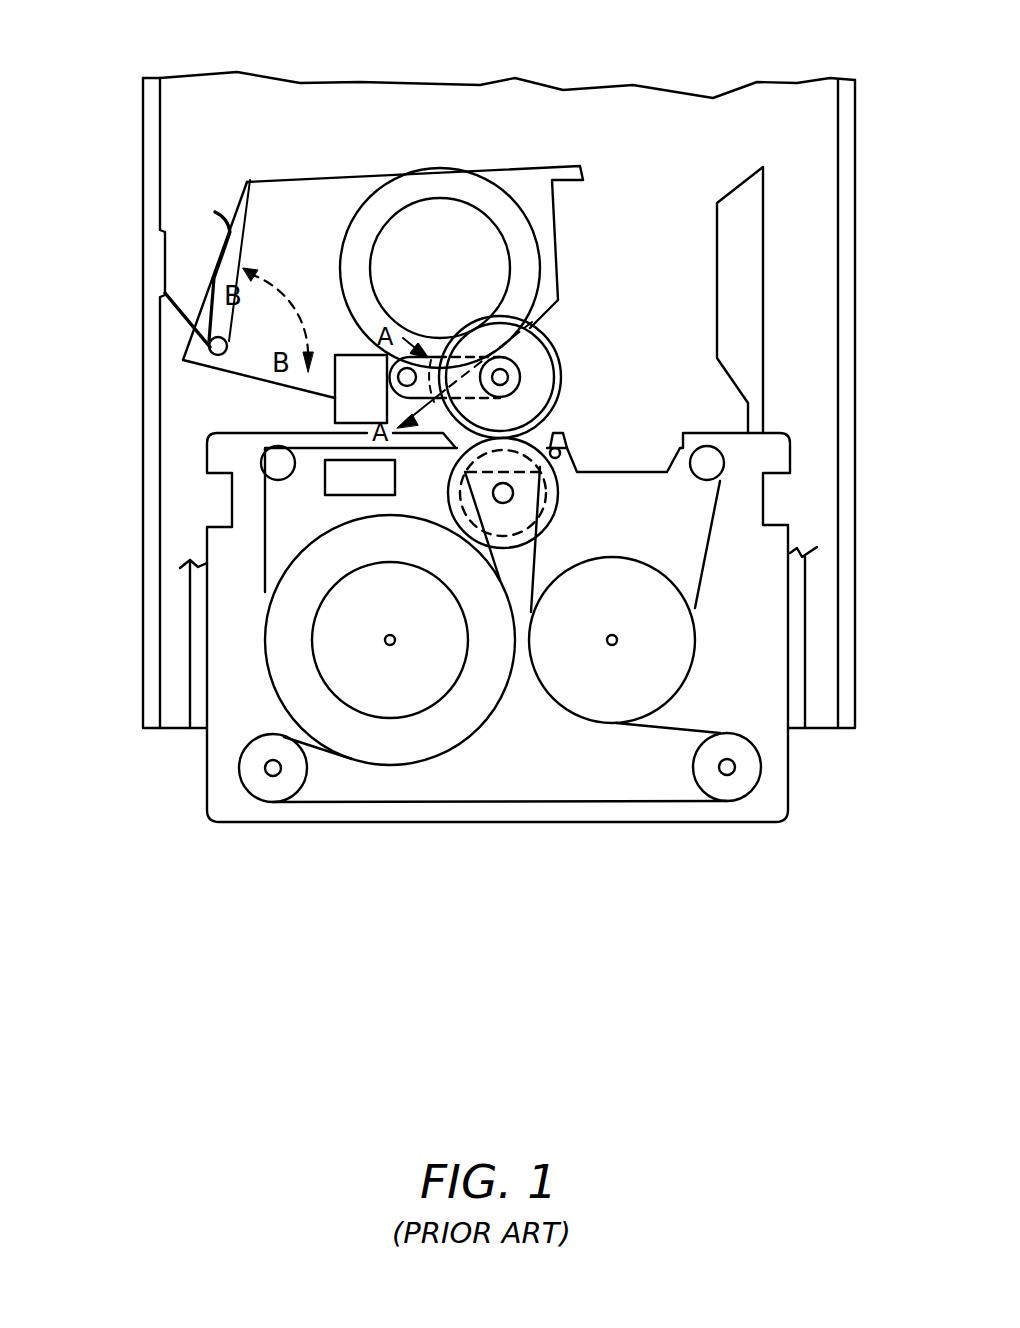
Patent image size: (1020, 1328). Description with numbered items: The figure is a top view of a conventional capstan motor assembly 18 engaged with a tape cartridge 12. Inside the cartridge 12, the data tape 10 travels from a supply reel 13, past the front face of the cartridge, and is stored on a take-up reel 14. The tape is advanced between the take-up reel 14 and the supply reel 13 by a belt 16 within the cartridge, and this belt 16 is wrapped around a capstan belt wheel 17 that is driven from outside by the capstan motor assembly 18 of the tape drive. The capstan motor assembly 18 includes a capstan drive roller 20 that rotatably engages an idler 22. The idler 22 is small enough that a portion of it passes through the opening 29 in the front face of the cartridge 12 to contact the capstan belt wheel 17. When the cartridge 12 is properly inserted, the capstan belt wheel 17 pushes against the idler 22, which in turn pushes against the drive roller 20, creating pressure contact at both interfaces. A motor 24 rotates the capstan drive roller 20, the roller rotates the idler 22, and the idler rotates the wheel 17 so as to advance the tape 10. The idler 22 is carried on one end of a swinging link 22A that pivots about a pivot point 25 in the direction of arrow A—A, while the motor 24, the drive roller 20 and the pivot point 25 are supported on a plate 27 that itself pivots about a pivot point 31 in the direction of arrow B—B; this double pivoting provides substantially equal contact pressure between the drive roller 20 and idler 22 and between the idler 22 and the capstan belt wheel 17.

The data tape 10 is at (713, 530).
The cartridge 12 is at (770, 620).
The supply reel 13 is at (675, 657).
The take-up reel 14 is at (337, 668).
The belt 16 is at (587, 802).
The capstan belt wheel 17 is at (533, 497).
The capstan motor assembly 18 is at (578, 278).
The capstan drive roller 20 is at (407, 230).
The idler 22 is at (549, 348).
The swinging link 22A is at (427, 393).
The motor 24 is at (467, 190).
The pivot point 25 is at (398, 380).
The plate 27 is at (306, 241).
The opening 29 is at (463, 450).
The pivot point 31 is at (210, 343).